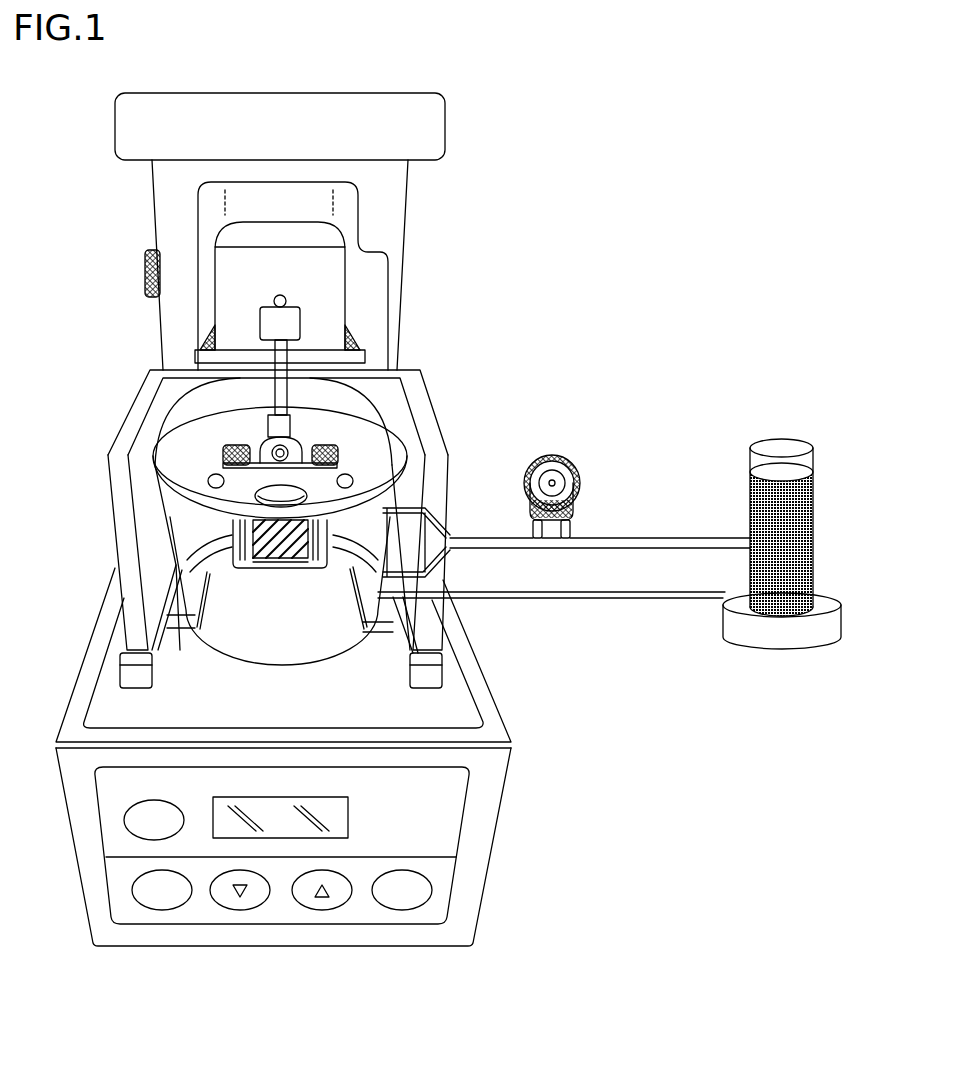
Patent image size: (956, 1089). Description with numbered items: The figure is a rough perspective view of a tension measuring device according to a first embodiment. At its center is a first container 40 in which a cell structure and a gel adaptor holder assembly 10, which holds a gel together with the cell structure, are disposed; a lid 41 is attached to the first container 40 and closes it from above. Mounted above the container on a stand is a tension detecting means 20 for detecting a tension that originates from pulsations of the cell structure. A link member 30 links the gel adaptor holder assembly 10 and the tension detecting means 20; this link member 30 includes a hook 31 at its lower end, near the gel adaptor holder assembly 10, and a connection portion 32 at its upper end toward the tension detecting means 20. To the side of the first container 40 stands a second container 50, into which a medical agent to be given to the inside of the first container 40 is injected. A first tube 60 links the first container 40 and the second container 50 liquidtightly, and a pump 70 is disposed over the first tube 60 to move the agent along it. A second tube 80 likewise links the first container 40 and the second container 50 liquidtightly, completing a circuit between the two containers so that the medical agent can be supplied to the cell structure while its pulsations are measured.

The gel adaptor holder assembly 10 is at (300, 578).
The tension detecting means 20 is at (330, 281).
The link member 30 is at (287, 397).
The hook 31 is at (298, 438).
The connection portion 32 is at (290, 325).
The first container 40 is at (183, 530).
The lid 41 is at (193, 441).
The second container 50 is at (815, 512).
The first tube 60 is at (682, 537).
The pump 70 is at (567, 456).
The second tube 80 is at (647, 600).